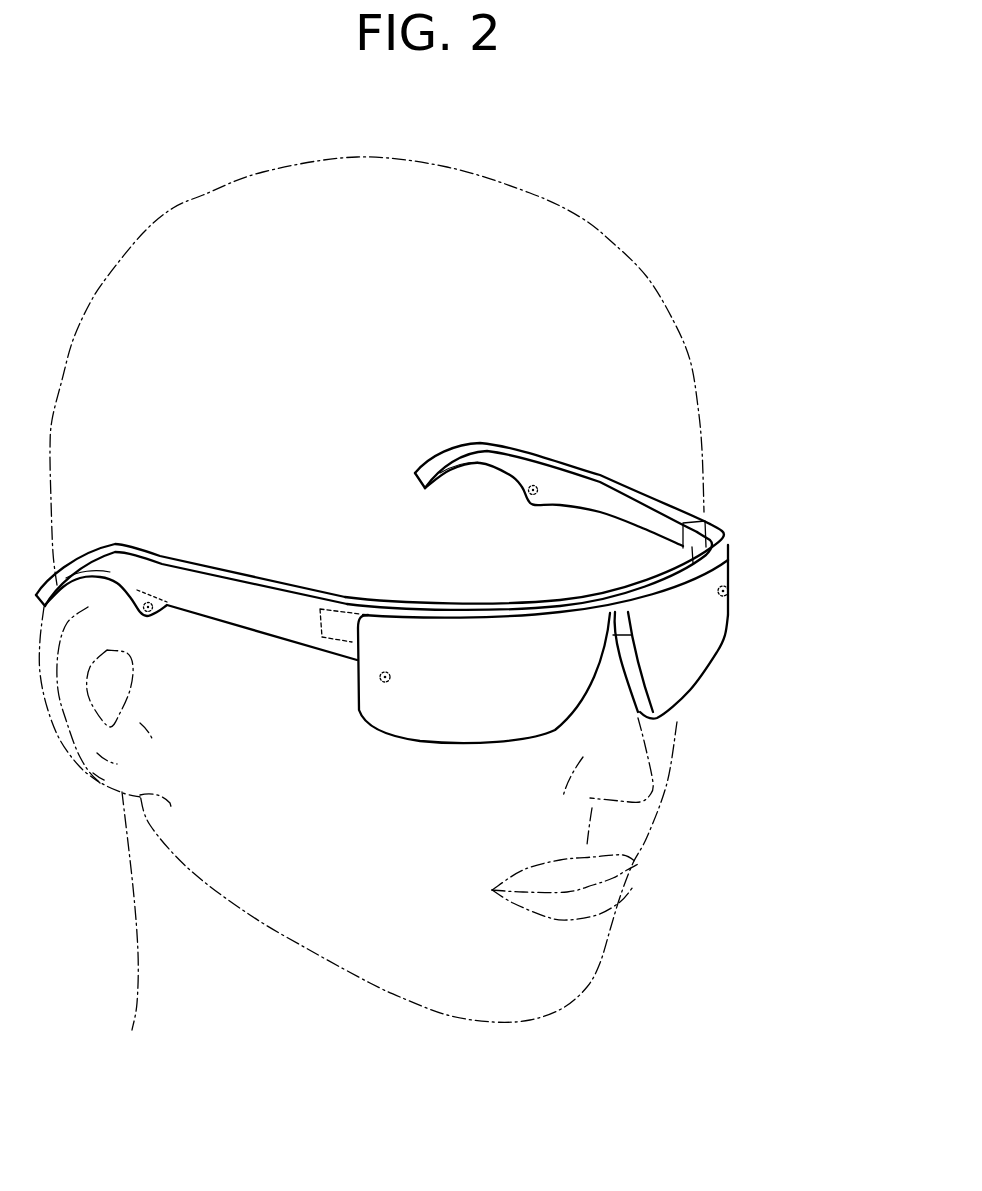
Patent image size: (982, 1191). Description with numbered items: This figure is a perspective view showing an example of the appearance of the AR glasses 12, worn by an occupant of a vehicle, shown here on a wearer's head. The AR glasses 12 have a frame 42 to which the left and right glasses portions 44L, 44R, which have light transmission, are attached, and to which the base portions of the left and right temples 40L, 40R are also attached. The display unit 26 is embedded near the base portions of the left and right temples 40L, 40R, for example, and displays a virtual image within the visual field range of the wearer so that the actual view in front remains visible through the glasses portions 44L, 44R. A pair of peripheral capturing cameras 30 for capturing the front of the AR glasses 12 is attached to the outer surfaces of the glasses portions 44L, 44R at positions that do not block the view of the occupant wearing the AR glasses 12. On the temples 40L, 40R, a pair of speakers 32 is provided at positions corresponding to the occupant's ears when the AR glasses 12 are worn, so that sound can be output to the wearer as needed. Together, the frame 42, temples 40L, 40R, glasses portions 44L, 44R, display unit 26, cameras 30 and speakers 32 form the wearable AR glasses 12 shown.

The AR glasses 12 is at (752, 647).
The display unit 26 is at (335, 646).
The peripheral capturing camera 30 is at (389, 684).
The speaker 32 is at (172, 606).
The right temple 40R is at (244, 600).
The left temple 40L is at (634, 510).
The frame 42 is at (487, 603).
The right glasses portion 44R is at (477, 713).
The left glasses portion 44L is at (700, 658).